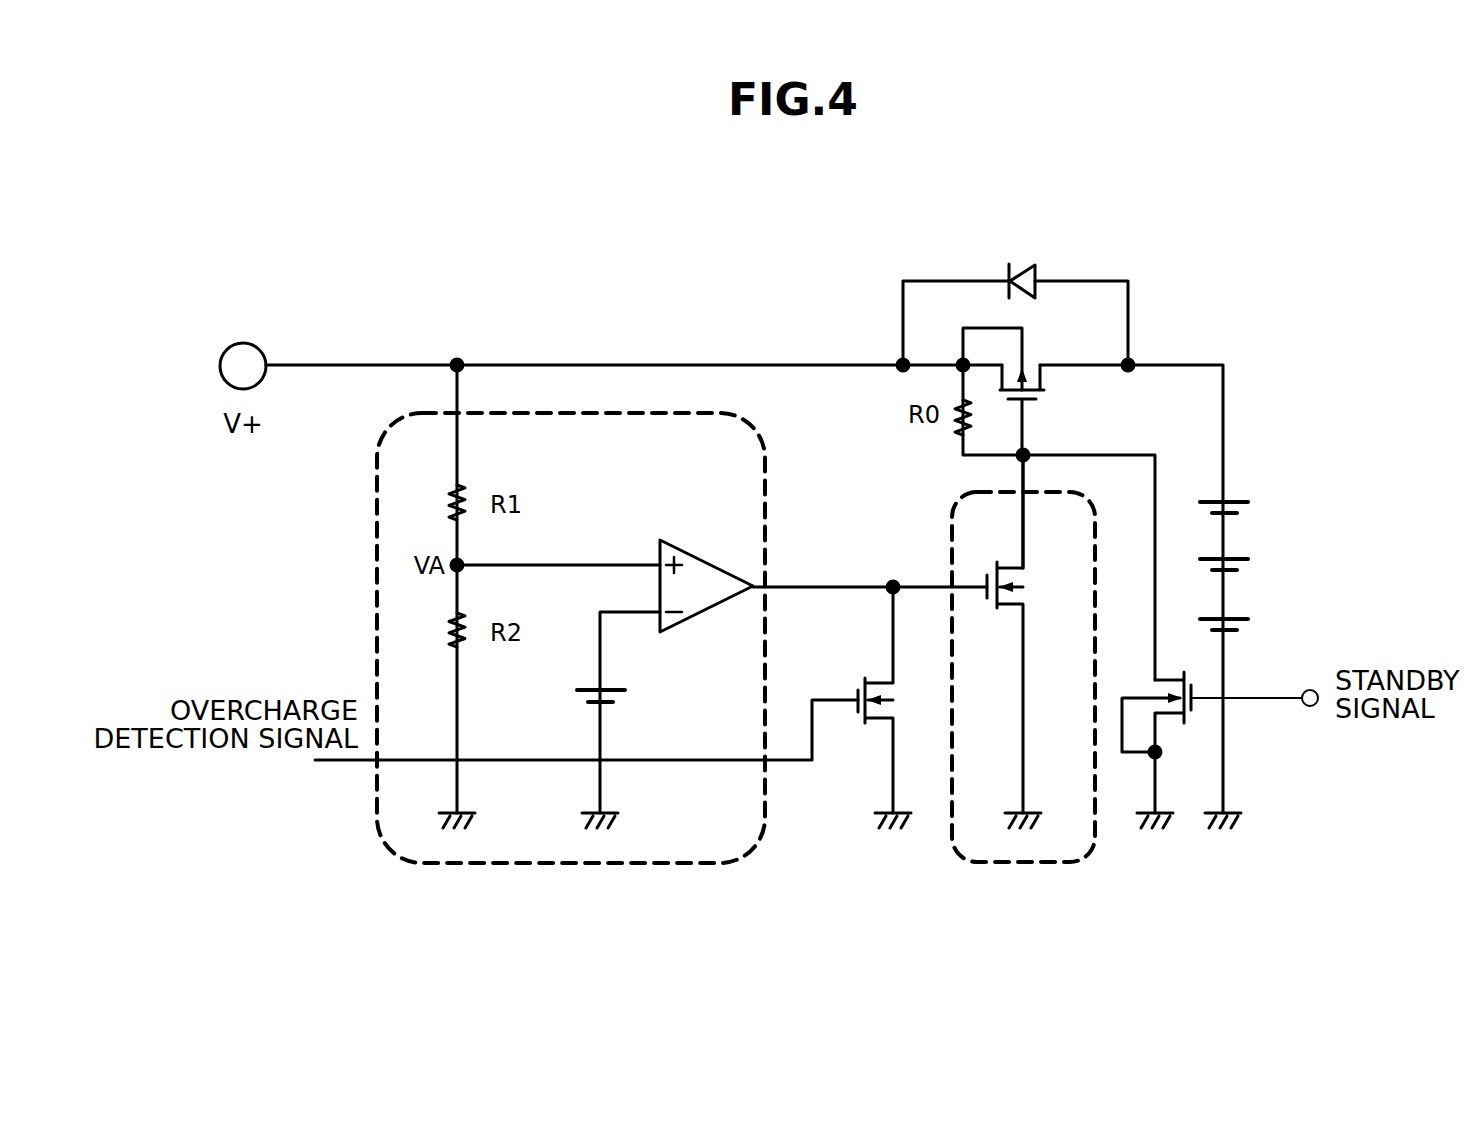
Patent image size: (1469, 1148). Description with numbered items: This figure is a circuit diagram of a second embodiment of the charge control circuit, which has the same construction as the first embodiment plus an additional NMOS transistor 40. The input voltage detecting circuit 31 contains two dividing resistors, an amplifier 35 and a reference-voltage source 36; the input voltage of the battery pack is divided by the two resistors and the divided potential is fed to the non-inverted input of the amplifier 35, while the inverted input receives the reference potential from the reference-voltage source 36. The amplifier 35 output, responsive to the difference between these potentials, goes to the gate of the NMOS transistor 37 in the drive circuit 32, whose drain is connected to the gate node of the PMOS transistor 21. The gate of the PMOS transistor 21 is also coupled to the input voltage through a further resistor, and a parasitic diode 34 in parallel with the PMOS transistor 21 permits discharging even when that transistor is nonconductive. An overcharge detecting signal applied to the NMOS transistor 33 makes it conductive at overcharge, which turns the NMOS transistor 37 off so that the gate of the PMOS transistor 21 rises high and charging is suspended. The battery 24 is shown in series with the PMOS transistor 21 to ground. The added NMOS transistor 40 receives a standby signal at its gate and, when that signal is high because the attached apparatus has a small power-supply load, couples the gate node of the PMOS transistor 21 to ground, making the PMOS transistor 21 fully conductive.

The PMOS transistor 21 is at (1062, 392).
The battery 24 is at (1268, 562).
The input voltage detecting circuit 31 is at (384, 846).
The drive circuit 32 is at (955, 858).
The NMOS transistor 33 is at (856, 740).
The parasitic diode 34 is at (1048, 262).
The amplifier 35 is at (706, 566).
The reference-voltage source 36 is at (648, 696).
The NMOS transistor 37 is at (1000, 620).
The NMOS transistor 40 is at (1193, 736).